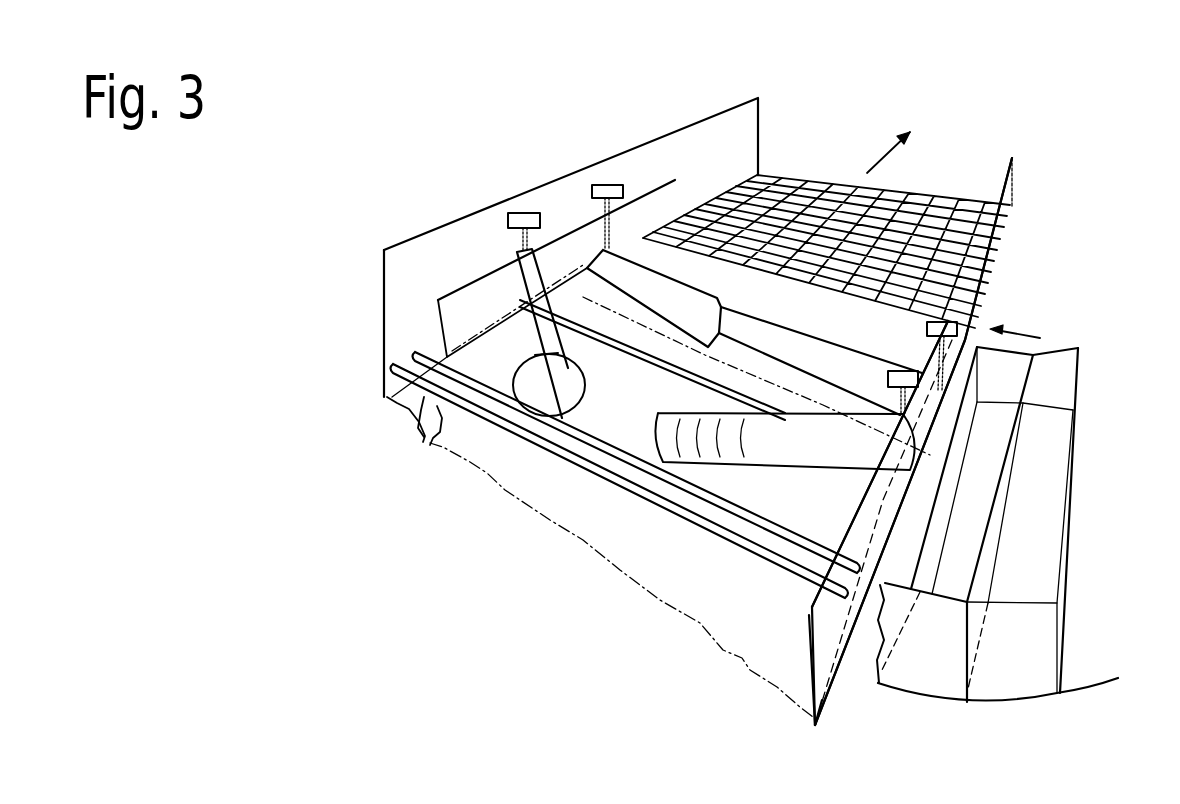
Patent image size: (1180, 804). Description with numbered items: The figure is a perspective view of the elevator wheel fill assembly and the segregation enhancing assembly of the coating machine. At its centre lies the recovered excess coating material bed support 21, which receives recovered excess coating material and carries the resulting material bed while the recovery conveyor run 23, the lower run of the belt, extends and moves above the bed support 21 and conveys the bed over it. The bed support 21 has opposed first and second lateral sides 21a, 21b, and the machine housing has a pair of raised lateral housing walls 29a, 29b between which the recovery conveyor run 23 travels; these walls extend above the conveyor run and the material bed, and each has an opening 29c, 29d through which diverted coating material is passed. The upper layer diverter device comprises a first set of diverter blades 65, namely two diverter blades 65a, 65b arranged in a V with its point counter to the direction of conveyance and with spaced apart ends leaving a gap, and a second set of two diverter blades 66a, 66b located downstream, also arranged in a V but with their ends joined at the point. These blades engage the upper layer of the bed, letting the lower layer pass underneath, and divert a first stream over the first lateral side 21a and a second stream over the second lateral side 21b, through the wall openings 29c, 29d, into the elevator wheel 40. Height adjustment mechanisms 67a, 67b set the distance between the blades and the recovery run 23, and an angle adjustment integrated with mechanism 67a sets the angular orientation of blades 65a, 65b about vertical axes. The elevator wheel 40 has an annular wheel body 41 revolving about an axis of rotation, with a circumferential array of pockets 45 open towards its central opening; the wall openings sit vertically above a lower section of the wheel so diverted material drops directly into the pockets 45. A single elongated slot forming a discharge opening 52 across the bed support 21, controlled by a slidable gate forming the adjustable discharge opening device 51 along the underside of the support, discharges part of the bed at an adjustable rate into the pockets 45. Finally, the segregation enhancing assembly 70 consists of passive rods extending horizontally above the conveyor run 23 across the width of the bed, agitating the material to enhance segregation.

The recovered excess coating material bed support 21 is at (788, 305).
The first lateral side 21a is at (830, 692).
The second lateral side 21b is at (447, 355).
The recovery conveyor run 23 is at (880, 194).
The lateral housing wall 29a is at (1003, 195).
The lateral housing wall 29b is at (745, 128).
The opening in lateral housing wall 29c is at (925, 410).
The opening in lateral housing wall 29d is at (493, 300).
The elevator wheel 40 is at (1012, 476).
The annular wheel body 41 is at (1063, 352).
The pockets 45 is at (952, 515).
The adjustable discharge opening device 51 is at (590, 312).
The discharge opening 52 is at (673, 372).
The rails 65 is at (626, 475).
The diverter blade 65a is at (793, 452).
The diverter blade 65b is at (558, 353).
The diverter blade 66a is at (838, 338).
The diverter blade 66b is at (650, 270).
The height adjustment mechanism 67a is at (522, 224).
The height adjustment mechanism 67b is at (612, 184).
The segregation enhancing assembly 70 is at (430, 442).